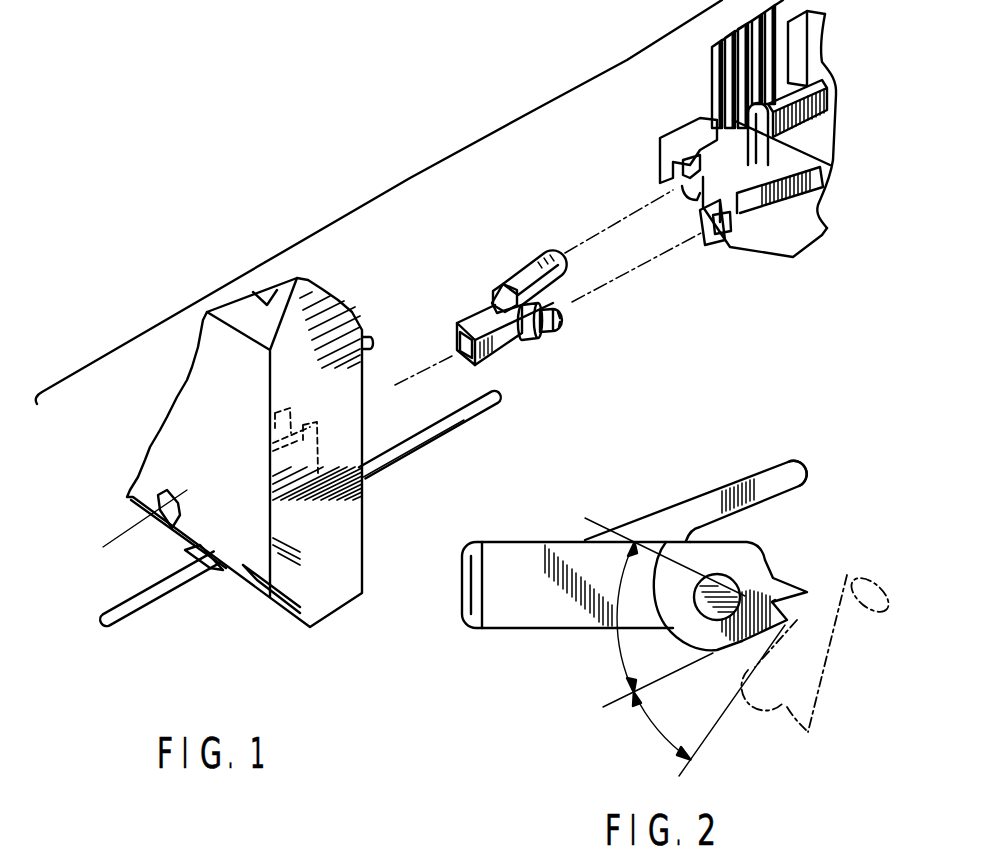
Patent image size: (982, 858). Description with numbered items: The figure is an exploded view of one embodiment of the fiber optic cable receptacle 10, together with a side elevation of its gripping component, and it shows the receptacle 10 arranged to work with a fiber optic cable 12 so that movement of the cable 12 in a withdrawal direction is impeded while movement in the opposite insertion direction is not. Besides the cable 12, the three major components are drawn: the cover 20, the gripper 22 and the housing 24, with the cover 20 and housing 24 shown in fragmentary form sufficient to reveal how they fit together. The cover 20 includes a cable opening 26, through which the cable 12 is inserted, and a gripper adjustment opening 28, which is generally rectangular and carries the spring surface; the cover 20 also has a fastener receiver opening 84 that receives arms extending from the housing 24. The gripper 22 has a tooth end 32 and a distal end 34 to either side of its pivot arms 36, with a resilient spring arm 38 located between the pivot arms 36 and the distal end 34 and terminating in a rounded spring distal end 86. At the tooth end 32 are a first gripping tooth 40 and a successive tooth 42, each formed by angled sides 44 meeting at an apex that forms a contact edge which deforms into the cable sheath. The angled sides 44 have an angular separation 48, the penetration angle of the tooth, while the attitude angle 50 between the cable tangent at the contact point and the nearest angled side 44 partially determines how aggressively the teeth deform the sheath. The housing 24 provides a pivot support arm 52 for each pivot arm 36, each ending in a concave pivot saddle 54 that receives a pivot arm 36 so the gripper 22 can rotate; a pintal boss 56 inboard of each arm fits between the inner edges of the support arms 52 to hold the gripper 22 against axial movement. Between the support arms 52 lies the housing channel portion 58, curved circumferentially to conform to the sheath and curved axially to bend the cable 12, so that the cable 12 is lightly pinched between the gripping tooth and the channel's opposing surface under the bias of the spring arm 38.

In FIG. 1, the fiber optic cable receptacle 10 is at (410, 178).
In FIG. 1, the fiber optic cable 12 is at (130, 630).
In FIG. 2, the fiber optic cable 12 is at (810, 725).
In FIG. 1, the cover 20 is at (181, 402).
In FIG. 1, the gripper 22 is at (473, 312).
In FIG. 2, the gripper 22 is at (522, 613).
In FIG. 1, the housing 24 is at (833, 102).
In FIG. 1, the cable opening 26 is at (220, 574).
In FIG. 1, the gripper adjustment opening 28 is at (128, 530).
In FIG. 1, the tooth end 32 is at (573, 305).
In FIG. 1, the distal end 34 is at (460, 360).
In FIG. 1, the pivot arms 36 is at (497, 290).
In FIG. 1, the resilient spring arm 38 is at (543, 258).
In FIG. 2, the resilient spring arm 38 is at (750, 480).
In FIG. 2, the first gripping tooth 40 is at (743, 647).
In FIG. 2, the successive tooth 42 is at (800, 588).
In FIG. 2, the angled sides 44 is at (776, 580).
In FIG. 2, the angular separation 48 is at (618, 640).
In FIG. 2, the attitude angle 50 is at (657, 730).
In FIG. 1, the pivot support arm 52 is at (722, 138).
In FIG. 1, the concave pivot saddle 54 is at (740, 133).
In FIG. 1, the pintal boss 56 is at (537, 333).
In FIG. 1, the housing channel portion 58 is at (720, 130).
In FIG. 1, the fastener receiver opening 84 is at (270, 600).
In FIG. 2, the spring distal end 86 is at (805, 474).